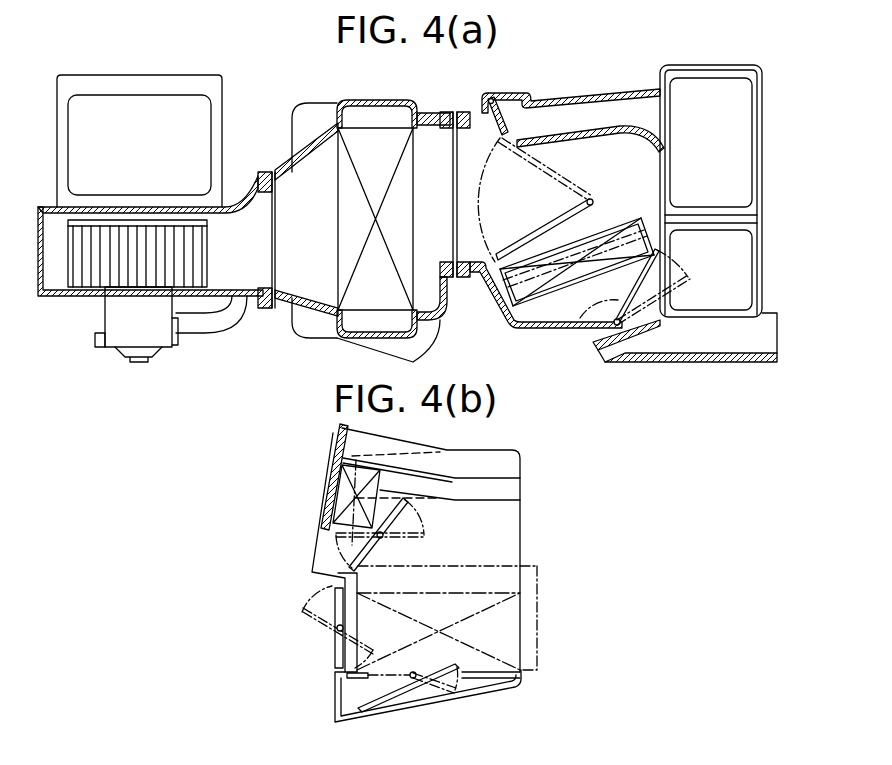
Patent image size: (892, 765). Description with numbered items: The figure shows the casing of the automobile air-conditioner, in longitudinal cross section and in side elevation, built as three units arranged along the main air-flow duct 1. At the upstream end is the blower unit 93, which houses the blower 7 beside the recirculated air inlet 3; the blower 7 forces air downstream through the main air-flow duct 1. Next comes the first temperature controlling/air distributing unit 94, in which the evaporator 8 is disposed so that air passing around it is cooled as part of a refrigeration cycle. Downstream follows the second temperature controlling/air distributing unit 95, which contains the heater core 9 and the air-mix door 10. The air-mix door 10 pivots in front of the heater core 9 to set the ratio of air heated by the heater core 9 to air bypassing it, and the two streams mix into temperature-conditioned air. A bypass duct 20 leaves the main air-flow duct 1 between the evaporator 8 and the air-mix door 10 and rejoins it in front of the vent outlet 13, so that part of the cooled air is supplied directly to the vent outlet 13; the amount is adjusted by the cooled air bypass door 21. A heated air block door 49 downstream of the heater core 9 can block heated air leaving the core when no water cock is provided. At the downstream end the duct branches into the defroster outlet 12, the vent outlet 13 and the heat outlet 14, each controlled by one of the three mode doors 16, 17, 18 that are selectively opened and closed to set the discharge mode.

In FIG. 4A, the main air-flow duct 1 is at (288, 197).
In FIG. 4A, the recirculated air inlet 3 is at (198, 138).
In FIG. 4A, the blower 7 is at (105, 272).
In FIG. 4A, the evaporator 8 is at (357, 300).
In FIG. 4A, the heater core 9 is at (512, 322).
In FIG. 4A, the air-mix door 10 is at (495, 262).
In FIG. 4A, the defroster outlet 12 is at (708, 300).
In FIG. 4B, the defroster outlet 12 is at (335, 650).
In FIG. 4A, the vent outlet 13 is at (738, 95).
In FIG. 4A, the heat outlet 14 is at (602, 352).
In FIG. 4B, the heat outlet 14 is at (420, 692).
In FIG. 4B, the mode door 16 is at (337, 666).
In FIG. 4B, the mode door 17 is at (352, 555).
In FIG. 4B, the mode door 18 is at (368, 718).
In FIG. 4A, the bypass duct 20 is at (608, 105).
In FIG. 4A, the cooled air bypass door 21 is at (498, 106).
In FIG. 4A, the heated air block door 49 is at (585, 327).
In FIG. 4A, the blower unit 93 is at (181, 76).
In FIG. 4A, the first temperature controlling/air distributing unit 94 is at (372, 94).
In FIG. 4A, the second temperature controlling/air distributing unit 95 is at (700, 62).